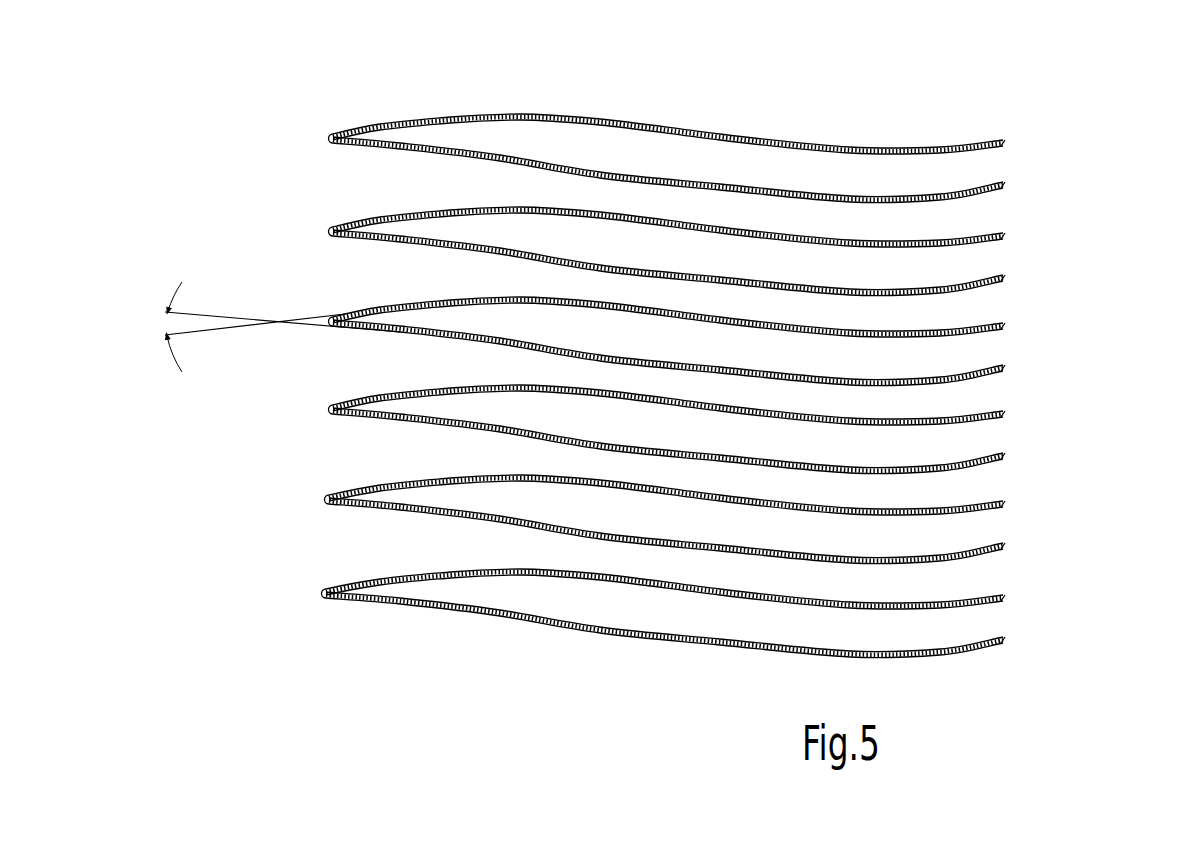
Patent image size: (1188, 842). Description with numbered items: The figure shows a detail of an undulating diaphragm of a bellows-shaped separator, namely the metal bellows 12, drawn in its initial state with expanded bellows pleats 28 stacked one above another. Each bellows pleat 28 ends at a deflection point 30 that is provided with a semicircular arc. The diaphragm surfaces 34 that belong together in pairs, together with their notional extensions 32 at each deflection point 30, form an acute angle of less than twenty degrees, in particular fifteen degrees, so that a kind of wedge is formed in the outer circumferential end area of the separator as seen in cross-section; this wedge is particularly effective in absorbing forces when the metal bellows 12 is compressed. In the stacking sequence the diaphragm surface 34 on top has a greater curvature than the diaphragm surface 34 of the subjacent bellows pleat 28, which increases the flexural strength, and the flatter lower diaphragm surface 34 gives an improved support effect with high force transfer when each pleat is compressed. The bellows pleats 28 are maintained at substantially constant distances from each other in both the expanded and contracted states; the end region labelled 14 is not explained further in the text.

The metal bellows 12 is at (985, 232).
The second layer end 14 is at (973, 364).
The bellows pleat 28 is at (908, 148).
The deflection point 30 is at (331, 136).
The notional extension 32 is at (207, 313).
The diaphragm surface 34 is at (378, 217).